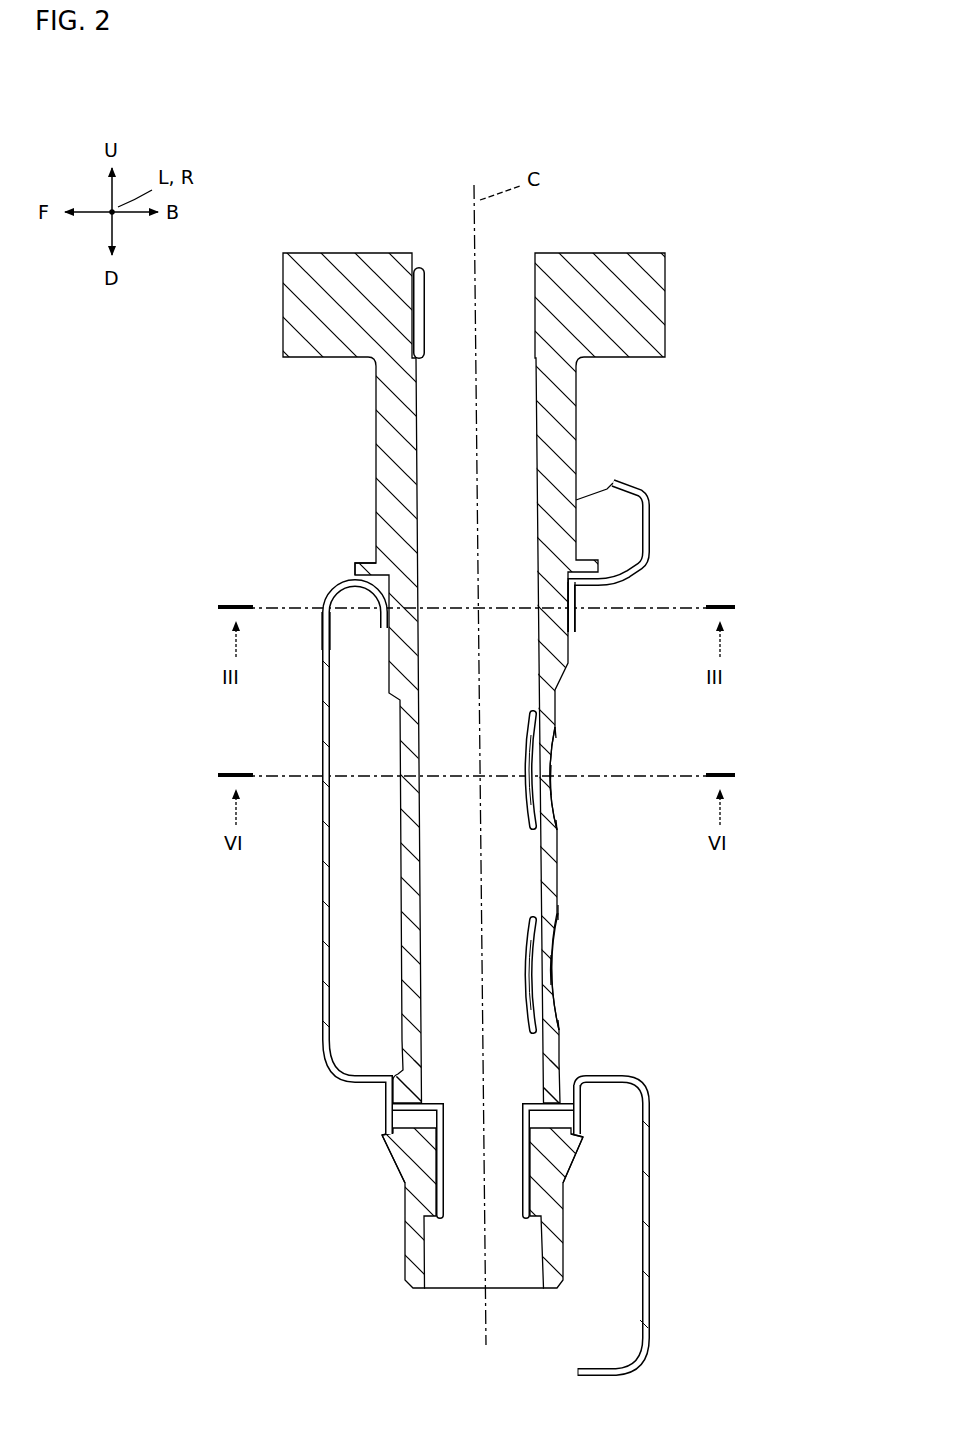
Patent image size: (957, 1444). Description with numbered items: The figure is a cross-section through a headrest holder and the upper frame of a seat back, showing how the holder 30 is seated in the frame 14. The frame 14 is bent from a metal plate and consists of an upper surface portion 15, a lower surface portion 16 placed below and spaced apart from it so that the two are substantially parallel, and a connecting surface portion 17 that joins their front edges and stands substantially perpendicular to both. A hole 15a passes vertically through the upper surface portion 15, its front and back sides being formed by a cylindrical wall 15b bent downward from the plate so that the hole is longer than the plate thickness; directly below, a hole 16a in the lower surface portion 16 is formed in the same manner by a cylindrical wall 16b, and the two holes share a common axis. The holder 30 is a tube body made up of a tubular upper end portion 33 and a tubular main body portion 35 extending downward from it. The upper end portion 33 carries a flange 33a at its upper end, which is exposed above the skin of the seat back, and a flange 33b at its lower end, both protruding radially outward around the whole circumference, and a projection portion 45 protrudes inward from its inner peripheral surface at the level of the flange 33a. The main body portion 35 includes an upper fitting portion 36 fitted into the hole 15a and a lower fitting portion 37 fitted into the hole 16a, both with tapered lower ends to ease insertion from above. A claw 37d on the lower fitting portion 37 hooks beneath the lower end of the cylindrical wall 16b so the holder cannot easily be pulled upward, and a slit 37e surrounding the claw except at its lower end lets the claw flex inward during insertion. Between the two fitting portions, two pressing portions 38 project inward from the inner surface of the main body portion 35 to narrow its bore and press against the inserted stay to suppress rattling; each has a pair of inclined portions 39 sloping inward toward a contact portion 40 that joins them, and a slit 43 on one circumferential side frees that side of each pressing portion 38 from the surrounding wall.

The frame 14 is at (726, 513).
The upper surface portion 15 is at (627, 572).
The hole 15a is at (383, 635).
The cylindrical wall 15b is at (363, 622).
The lower surface portion 16 is at (592, 1076).
The hole 16a is at (398, 1086).
The cylindrical wall 16b is at (385, 1111).
The connecting surface portion 17 is at (322, 905).
The holder 30 is at (722, 214).
The upper end portion 33 is at (543, 397).
The flange 33a is at (655, 325).
The flange 33b is at (365, 568).
The main body portion 35 is at (555, 863).
The upper fitting portion 36 is at (552, 640).
The lower fitting portion 37 is at (567, 1077).
The claw 37d is at (398, 1158).
The slit 37e is at (530, 1112).
The pressing portion 38 is at (568, 726).
The inclined portion 39 is at (550, 745).
The contact portion 40 is at (551, 787).
The slit 43 is at (525, 735).
The projection portion 45 is at (426, 282).